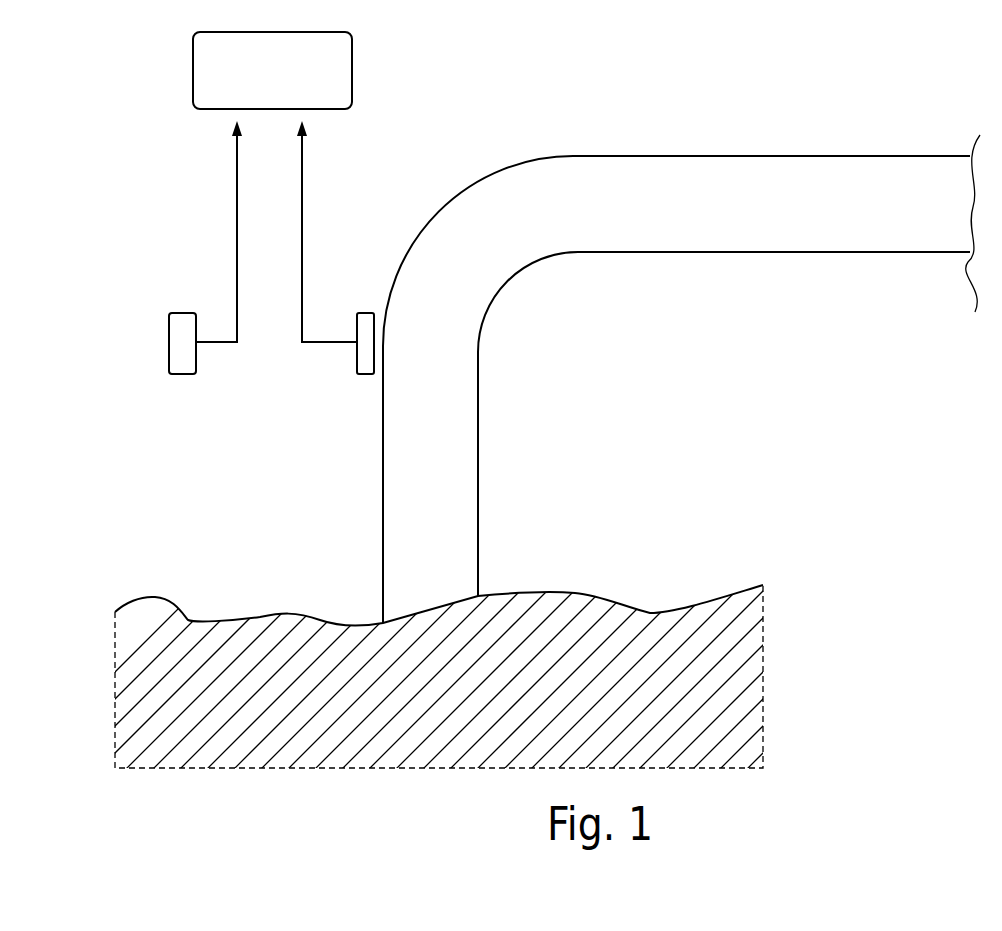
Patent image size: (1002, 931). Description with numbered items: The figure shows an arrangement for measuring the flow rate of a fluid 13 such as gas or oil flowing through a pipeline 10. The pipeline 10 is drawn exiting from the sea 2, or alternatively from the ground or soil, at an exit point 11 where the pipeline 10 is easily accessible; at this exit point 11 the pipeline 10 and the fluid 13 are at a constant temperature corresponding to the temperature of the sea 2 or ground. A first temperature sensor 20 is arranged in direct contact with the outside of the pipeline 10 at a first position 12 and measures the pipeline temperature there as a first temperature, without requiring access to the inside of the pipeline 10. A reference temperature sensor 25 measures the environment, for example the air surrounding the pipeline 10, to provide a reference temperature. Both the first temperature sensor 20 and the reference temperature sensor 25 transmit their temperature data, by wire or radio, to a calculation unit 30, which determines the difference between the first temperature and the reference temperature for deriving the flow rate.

The sea 2 is at (752, 648).
The pipeline 10 is at (766, 239).
The exit point 11 is at (343, 573).
The first position 12 is at (368, 381).
The fluid 13 is at (426, 480).
The first temperature sensor 20 is at (361, 312).
The reference temperature sensor 25 is at (184, 312).
The calculation unit 30 is at (272, 70).